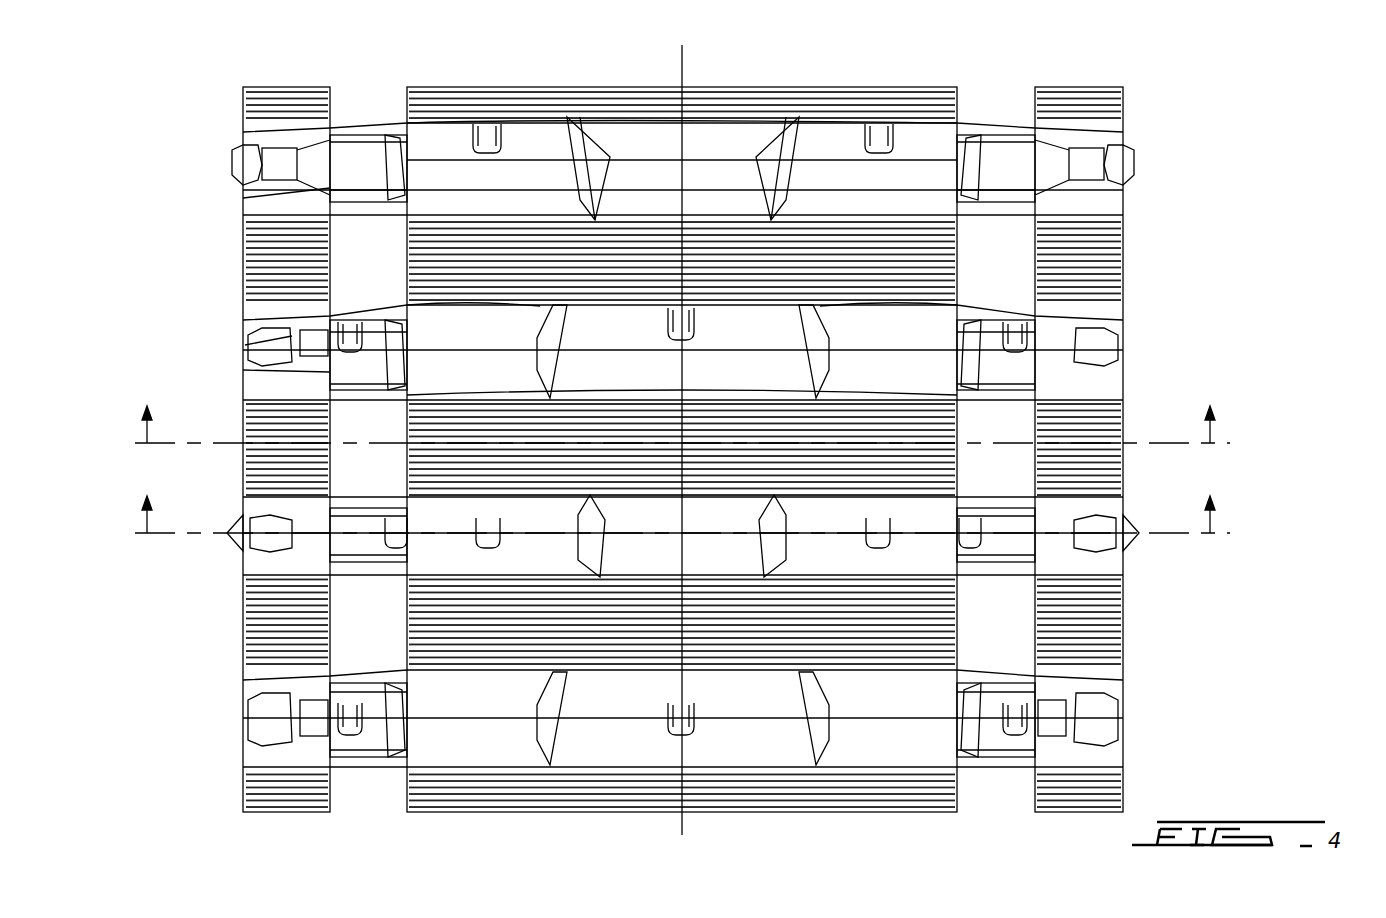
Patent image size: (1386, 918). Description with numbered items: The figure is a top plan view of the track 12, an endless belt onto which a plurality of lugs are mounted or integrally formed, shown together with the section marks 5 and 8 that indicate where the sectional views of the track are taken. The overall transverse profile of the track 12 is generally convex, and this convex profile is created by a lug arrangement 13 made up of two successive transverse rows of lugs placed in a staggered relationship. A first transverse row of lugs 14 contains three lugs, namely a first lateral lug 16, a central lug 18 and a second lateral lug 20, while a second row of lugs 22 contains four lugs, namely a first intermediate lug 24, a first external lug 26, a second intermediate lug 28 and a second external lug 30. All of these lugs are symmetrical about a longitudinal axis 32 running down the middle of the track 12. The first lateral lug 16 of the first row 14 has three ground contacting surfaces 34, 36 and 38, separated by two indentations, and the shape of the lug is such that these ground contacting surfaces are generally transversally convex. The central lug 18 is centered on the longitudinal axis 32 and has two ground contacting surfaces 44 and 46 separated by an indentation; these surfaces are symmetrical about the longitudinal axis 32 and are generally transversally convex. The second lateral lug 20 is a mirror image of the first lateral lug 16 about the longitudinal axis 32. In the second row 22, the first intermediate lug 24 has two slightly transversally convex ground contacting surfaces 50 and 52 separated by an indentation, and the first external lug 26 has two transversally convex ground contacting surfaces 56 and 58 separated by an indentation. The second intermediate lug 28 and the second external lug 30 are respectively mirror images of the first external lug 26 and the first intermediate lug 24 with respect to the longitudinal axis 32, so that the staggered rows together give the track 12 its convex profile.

The track 12 is at (160, 164).
The lug arrangement 13 is at (1228, 123).
The first transverse row of lugs 14 is at (1143, 300).
The first lateral lug 16 is at (384, 395).
The central lug 18 is at (760, 382).
The second lateral lug 20 is at (988, 348).
The second row of lugs 22 is at (1155, 123).
The first intermediate lug 24 is at (245, 190).
The first external lug 26 is at (522, 124).
The second intermediate lug 28 is at (828, 162).
The second external lug 30 is at (1042, 138).
The longitudinal axis 32 is at (686, 74).
The ground contacting surface 34 is at (247, 352).
The ground contacting surface 36 is at (250, 392).
The ground contacting surface 38 is at (372, 362).
The ground contacting surface 44 is at (600, 312).
The ground contacting surface 46 is at (760, 330).
The ground contacting surface 50 is at (240, 160).
The ground contacting surface 52 is at (248, 150).
The ground contacting surface 56 is at (450, 128).
The ground contacting surface 58 is at (547, 115).
The section line 5- 5 is at (678, 440).
The section line 8- 8 is at (678, 529).